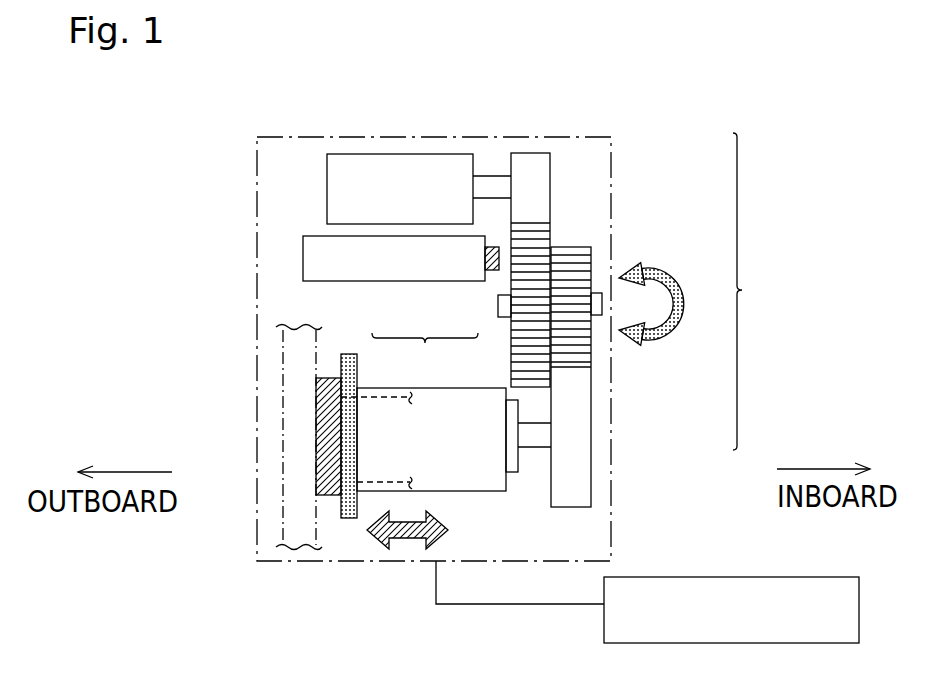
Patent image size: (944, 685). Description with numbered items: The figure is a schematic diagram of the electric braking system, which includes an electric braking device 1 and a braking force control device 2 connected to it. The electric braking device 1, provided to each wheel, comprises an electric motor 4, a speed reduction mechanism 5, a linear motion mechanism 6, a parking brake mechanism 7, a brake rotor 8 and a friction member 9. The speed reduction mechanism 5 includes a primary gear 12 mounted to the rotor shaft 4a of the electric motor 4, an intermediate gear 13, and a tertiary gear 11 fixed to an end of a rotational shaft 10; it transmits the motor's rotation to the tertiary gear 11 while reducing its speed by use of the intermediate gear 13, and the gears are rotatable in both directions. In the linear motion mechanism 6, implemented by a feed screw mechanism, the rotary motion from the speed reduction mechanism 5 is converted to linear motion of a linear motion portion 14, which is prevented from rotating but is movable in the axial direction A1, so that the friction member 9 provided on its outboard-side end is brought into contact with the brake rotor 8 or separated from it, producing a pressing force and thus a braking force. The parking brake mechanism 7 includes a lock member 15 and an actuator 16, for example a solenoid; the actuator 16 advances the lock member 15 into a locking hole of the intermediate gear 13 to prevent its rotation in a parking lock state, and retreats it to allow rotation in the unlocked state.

The electric braking device 1 is at (257, 203).
The braking force control device 2 is at (697, 577).
The electric motor 4 is at (398, 160).
The rotor shaft 4a is at (490, 183).
The speed reduction mechanism 5 is at (748, 291).
The linear motion mechanism 6 is at (457, 488).
The parking brake mechanism 7 is at (401, 307).
The brake rotor 8 is at (293, 348).
The friction member 9 is at (327, 493).
The rotational shaft 10 is at (523, 440).
The tertiary gear 11 is at (585, 428).
The primary gear 12 is at (541, 160).
The intermediate gear 13 is at (600, 350).
The linear motion portion 14 is at (320, 397).
The lock member 15 is at (490, 271).
The actuator 16 is at (393, 281).
The axial direction A1 is at (448, 532).